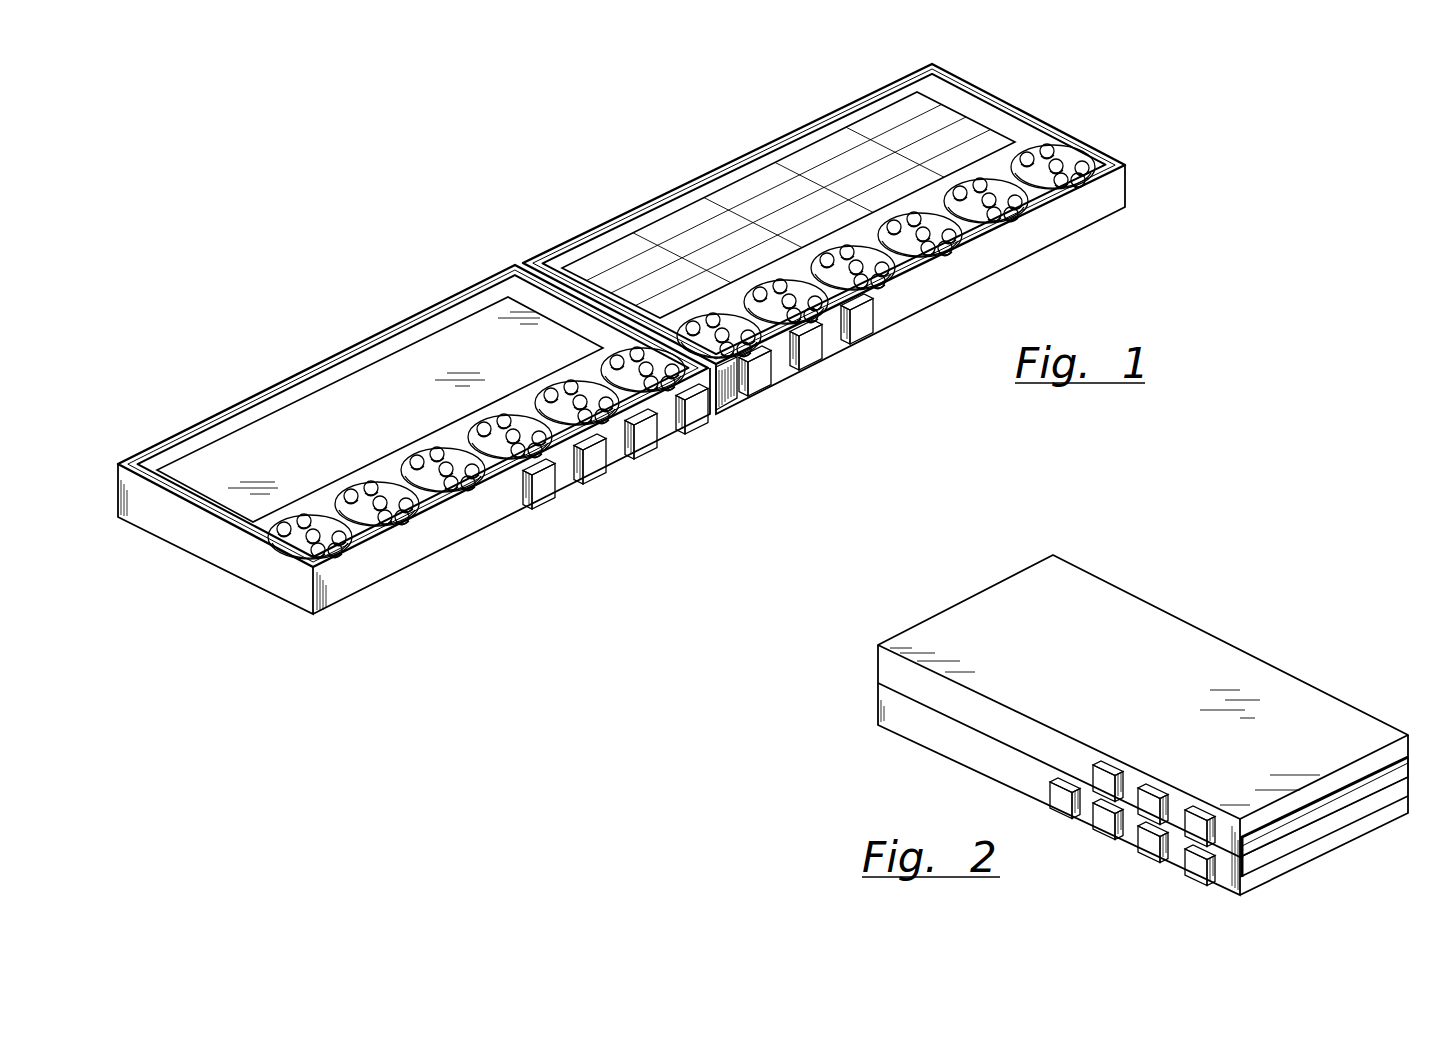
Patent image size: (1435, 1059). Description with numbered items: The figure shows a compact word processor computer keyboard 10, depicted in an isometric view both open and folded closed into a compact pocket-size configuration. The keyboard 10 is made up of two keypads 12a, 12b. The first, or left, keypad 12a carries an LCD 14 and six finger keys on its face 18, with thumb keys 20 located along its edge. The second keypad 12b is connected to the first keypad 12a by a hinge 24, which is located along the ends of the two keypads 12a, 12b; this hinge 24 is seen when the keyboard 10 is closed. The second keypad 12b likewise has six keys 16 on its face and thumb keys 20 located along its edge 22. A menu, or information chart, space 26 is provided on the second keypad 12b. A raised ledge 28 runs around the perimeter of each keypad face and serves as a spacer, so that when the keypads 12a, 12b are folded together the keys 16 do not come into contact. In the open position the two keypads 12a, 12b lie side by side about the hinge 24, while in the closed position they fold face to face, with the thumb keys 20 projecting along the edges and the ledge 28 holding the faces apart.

In FIG. 1, the computer keyboard 10 is at (497, 226).
In FIG. 1, the first keypad 12a is at (282, 600).
In FIG. 2, the first keypad 12a is at (917, 740).
In FIG. 1, the second keypad 12b is at (1093, 233).
In FIG. 2, the second keypad 12b is at (1088, 617).
In FIG. 1, the LCD 14 is at (432, 358).
In FIG. 1, the keys 16 is at (380, 492).
In FIG. 1, the face 18 is at (305, 512).
In FIG. 1, the thumb keys 20 is at (597, 470).
In FIG. 2, the thumb keys 20 is at (1135, 847).
In FIG. 1, the edge 22 is at (423, 547).
In FIG. 2, the hinge 24 is at (1283, 847).
In FIG. 1, the menu space 26 is at (770, 192).
In FIG. 1, the raised ledge 28 is at (190, 432).